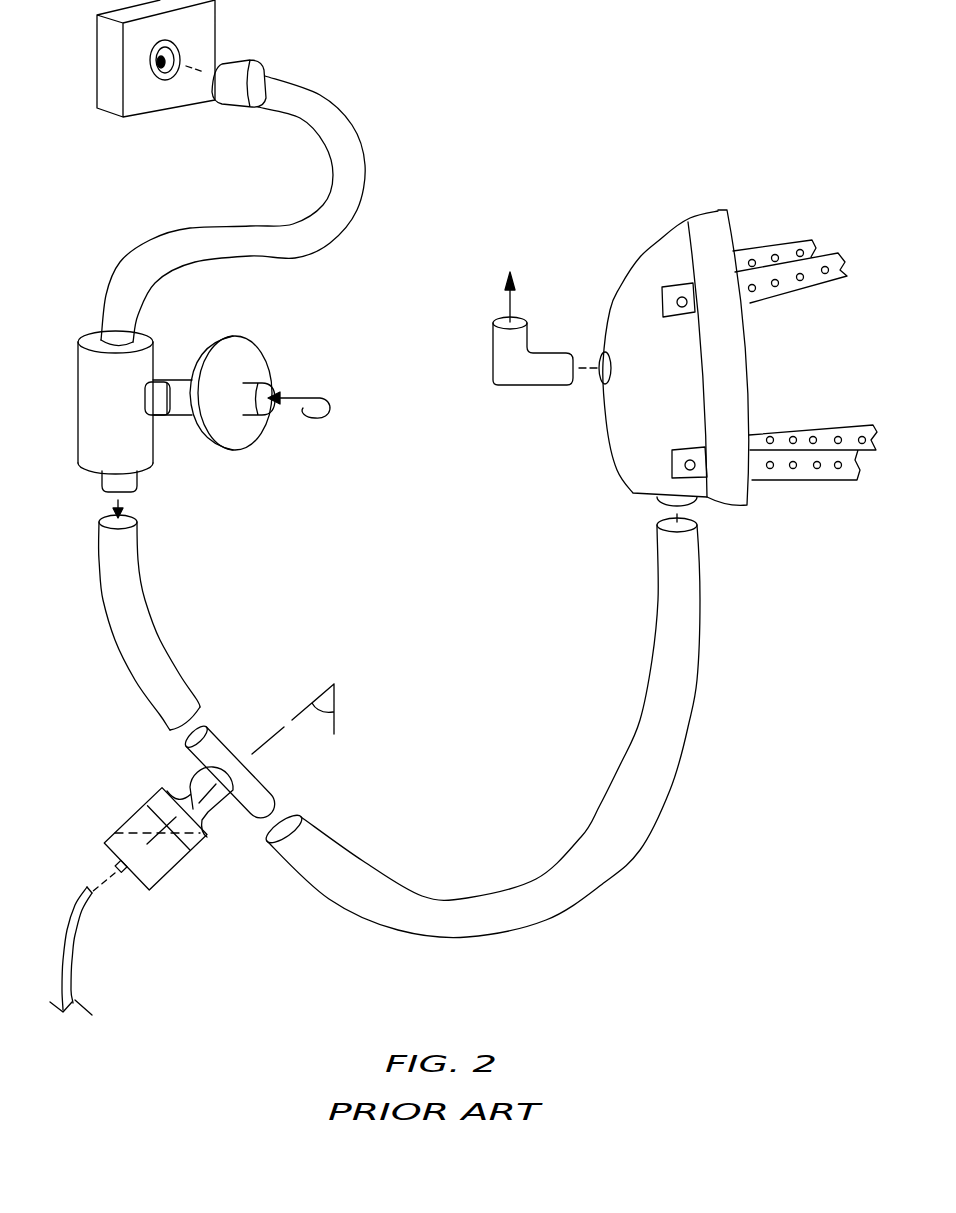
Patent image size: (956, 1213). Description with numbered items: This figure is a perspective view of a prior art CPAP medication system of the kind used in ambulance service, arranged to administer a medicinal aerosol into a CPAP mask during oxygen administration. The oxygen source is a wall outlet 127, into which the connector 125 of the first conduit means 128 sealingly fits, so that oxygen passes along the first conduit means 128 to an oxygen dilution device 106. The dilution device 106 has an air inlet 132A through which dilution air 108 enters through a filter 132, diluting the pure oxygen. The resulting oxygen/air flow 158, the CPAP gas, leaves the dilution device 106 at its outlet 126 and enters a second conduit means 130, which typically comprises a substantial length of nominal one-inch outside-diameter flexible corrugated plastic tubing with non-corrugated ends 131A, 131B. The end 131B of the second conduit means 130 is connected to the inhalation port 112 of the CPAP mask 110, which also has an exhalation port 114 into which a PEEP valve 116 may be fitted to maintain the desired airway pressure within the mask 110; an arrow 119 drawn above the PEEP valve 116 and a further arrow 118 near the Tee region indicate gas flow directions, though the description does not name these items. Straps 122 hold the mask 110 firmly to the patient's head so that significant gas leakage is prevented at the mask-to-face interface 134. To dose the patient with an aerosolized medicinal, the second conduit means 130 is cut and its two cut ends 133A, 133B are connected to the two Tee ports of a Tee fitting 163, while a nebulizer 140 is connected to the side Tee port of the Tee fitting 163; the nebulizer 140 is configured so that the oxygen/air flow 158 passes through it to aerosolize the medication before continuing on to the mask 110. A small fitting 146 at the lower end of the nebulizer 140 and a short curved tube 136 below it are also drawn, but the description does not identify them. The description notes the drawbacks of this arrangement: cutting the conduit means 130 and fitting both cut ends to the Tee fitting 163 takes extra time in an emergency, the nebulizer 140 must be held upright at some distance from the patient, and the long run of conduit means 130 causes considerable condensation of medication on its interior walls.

The oxygen dilution device 106 is at (95, 405).
The dilution air 108 is at (300, 396).
The CPAP mask 110 is at (650, 277).
The inhalation port 112 is at (668, 503).
The exhalation port 114 is at (596, 386).
The PEEP valve 116 is at (510, 371).
The exhaust flow arrow 118 is at (329, 706).
The vent flow arrow 119 is at (510, 302).
The straps 122 is at (787, 250).
The connector 125 is at (232, 72).
The outlet 126 is at (130, 479).
The wall outlet 127 is at (180, 57).
The first conduit means 128 is at (353, 173).
The second conduit means 130 is at (128, 645).
The non-corrugated end 131A is at (137, 537).
The non-corrugated end 131B is at (667, 538).
The filter 132 is at (236, 362).
The air inlet 132A is at (252, 394).
The cut end 133A is at (177, 748).
The cut end 133B is at (263, 837).
The mask-to-face interface 134 is at (745, 355).
The exhaust tube 136 is at (70, 947).
The nebulizer 140 is at (145, 815).
The valve outlet 146 is at (117, 866).
The oxygen/air flow 158 is at (127, 508).
The Tee fitting 163 is at (220, 742).